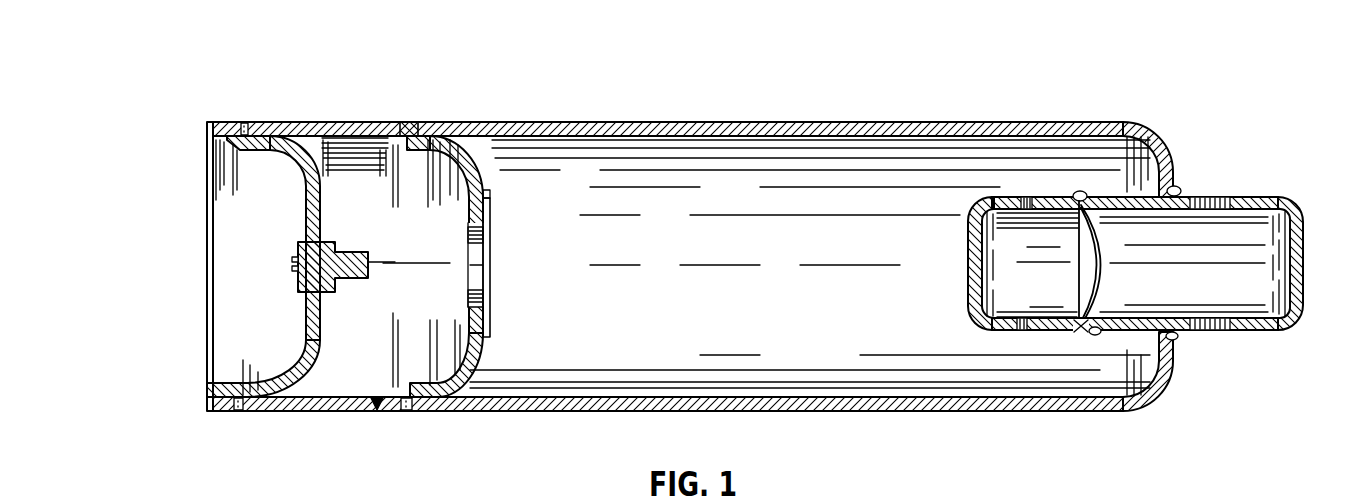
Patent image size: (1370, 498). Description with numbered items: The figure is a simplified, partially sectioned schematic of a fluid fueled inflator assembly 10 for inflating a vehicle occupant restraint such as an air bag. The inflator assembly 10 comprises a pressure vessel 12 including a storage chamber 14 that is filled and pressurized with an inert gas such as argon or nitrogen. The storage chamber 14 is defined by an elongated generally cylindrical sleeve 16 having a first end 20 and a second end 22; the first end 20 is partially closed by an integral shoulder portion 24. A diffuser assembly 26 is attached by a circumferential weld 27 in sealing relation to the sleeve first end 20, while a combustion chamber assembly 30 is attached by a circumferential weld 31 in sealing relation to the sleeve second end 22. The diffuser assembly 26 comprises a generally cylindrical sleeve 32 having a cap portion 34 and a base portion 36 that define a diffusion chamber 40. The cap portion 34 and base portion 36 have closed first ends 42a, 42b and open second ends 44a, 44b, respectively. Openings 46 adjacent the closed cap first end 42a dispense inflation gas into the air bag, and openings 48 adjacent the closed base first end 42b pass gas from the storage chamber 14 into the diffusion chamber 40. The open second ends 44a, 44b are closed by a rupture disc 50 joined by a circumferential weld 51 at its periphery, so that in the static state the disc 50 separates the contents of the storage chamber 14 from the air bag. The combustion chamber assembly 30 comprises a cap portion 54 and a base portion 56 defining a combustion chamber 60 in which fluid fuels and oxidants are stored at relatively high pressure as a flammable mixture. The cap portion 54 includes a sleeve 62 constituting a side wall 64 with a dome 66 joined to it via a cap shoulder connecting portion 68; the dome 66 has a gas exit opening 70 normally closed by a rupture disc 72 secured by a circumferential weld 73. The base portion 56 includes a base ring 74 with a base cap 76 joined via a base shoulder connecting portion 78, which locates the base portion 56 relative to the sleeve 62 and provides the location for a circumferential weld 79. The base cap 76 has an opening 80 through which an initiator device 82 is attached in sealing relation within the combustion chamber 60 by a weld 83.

The fluid fueled inflator assembly 10 is at (1015, 111).
The pressure vessel 12 is at (735, 126).
The storage chamber 14 is at (650, 150).
The elongated generally cylindrical sleeve 16 is at (870, 122).
The first end 20 is at (1150, 132).
The second end 22 is at (428, 130).
The integral shoulder portion 24 is at (1163, 368).
The diffuser assembly 26 is at (1286, 199).
The circumferential weld 27 is at (1177, 189).
The combustion chamber assembly 30 is at (310, 122).
The circumferential weld 31 is at (410, 122).
The generally cylindrical sleeve 32 is at (1120, 197).
The cap portion 34 is at (1265, 333).
The base portion 36 is at (970, 242).
The diffusion chamber 40 is at (1288, 245).
The closed first end 42a is at (1300, 280).
The closed first end 42b is at (975, 283).
The open second end 44a is at (1093, 334).
The open second end 44b is at (1080, 333).
The openings 46 is at (1212, 197).
The openings 48 is at (1025, 197).
The rupture disc 50 is at (1108, 266).
The circumferential weld 51 is at (1080, 196).
The cap portion 54 is at (378, 403).
The base portion 56 is at (293, 385).
The combustion chamber 60 is at (352, 358).
The sleeve 62 is at (353, 136).
The side wall 64 is at (275, 133).
The dome 66 is at (480, 345).
The cap shoulder connecting portion 68 is at (407, 402).
The gas exit opening 70 is at (466, 245).
The rupture disc 72 is at (492, 222).
The circumferential weld 73 is at (492, 190).
The base ring 74 is at (215, 121).
The base cap 76 is at (321, 177).
The base shoulder connecting portion 78 is at (228, 138).
The circumferential weld 79 is at (240, 405).
The opening 80 is at (319, 223).
The initiator device 82 is at (329, 268).
The weld 83 is at (300, 248).